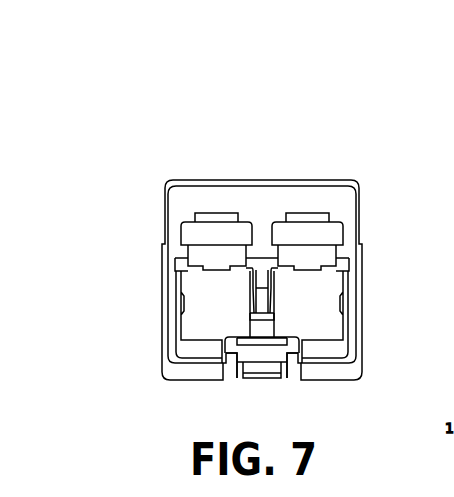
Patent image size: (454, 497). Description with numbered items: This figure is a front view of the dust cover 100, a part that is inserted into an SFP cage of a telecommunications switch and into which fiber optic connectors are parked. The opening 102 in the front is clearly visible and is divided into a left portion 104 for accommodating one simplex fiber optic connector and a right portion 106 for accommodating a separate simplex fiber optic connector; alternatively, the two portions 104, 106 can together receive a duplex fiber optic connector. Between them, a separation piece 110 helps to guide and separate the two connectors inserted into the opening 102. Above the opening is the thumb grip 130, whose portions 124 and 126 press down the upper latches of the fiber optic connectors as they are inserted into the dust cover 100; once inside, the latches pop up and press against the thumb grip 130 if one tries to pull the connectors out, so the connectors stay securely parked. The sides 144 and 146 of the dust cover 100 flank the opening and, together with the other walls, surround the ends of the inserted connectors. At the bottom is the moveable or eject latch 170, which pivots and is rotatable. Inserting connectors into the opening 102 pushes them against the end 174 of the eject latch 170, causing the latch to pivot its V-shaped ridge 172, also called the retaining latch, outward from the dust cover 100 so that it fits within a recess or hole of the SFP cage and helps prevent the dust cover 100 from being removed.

The dust cover 100 is at (241, 247).
The thumb grip 130 is at (313, 176).
The portion of thumb grip 124 is at (214, 210).
The portion of thumb grip 126 is at (311, 210).
The left portion of opening 104 is at (148, 240).
The right portion of opening 106 is at (355, 261).
The opening 102 is at (206, 298).
The separation piece 110 is at (247, 290).
The side 144 is at (161, 290).
The side 146 is at (367, 307).
The moveable latch 170 is at (291, 375).
The V-shaped ridge 172 is at (261, 381).
The end of eject latch 174 is at (236, 375).